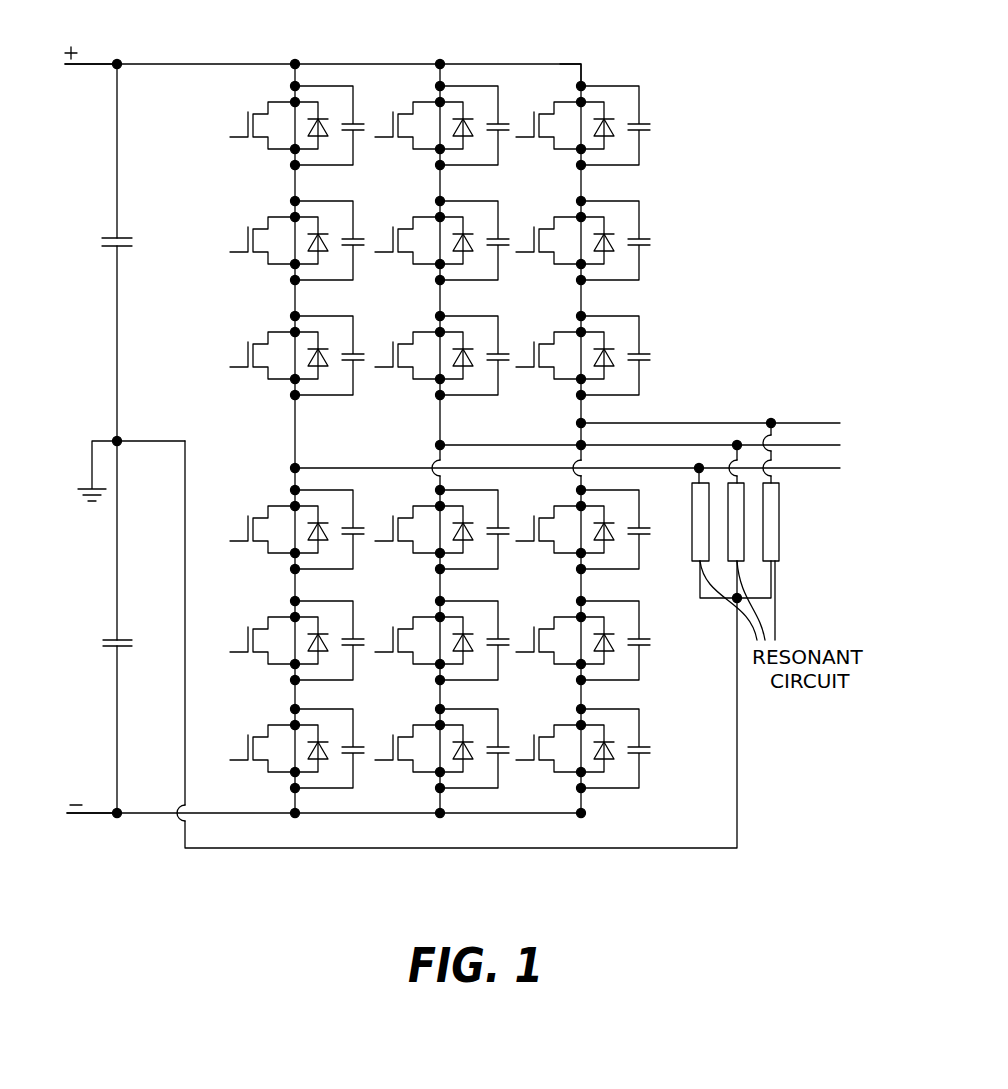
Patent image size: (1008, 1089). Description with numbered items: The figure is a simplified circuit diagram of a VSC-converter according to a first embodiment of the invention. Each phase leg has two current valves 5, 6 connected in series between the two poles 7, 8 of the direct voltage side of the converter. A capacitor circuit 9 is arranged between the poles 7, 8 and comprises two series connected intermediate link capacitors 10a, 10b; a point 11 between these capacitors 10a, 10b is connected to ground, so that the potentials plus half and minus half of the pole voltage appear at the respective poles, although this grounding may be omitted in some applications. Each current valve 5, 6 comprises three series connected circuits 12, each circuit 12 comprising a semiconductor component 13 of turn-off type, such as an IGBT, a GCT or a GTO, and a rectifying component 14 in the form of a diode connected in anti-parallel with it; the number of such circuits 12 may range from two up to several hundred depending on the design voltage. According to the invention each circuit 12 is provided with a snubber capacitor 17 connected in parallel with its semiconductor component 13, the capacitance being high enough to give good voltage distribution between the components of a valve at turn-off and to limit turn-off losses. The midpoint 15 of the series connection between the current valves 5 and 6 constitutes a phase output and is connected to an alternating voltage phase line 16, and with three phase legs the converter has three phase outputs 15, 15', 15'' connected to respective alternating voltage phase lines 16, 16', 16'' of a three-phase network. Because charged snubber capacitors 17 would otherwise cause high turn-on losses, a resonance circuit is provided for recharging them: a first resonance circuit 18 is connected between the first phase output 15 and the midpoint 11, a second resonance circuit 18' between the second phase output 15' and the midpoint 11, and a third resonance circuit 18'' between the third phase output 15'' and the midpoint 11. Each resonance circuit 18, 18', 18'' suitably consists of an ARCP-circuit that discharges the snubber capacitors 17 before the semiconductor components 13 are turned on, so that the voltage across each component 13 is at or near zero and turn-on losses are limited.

The current valve 5 is at (485, 238).
The current valve 6 is at (660, 692).
The pole 7 is at (93, 64).
The pole 8 is at (93, 813).
The capacitor circuit 9 is at (146, 178).
The intermediate link capacitor 10a is at (150, 229).
The intermediate link capacitor 10b is at (110, 640).
The point 11 is at (118, 441).
The series connected circuit 12 is at (596, 75).
The semiconductor component of turn-off type 13 is at (534, 122).
The rectifying component 14 is at (606, 118).
The phase output 15 is at (556, 412).
The phase output 15' is at (415, 434).
The phase output 15'' is at (269, 458).
The alternating voltage phase line 16 is at (710, 409).
The alternating voltage phase line 16' is at (656, 432).
The alternating voltage phase line 16'' is at (567, 484).
The snubber capacitor 17 is at (643, 130).
The resonance circuit 18 is at (795, 522).
The resonance circuit 18' is at (780, 525).
The resonance circuit 18'' is at (676, 519).